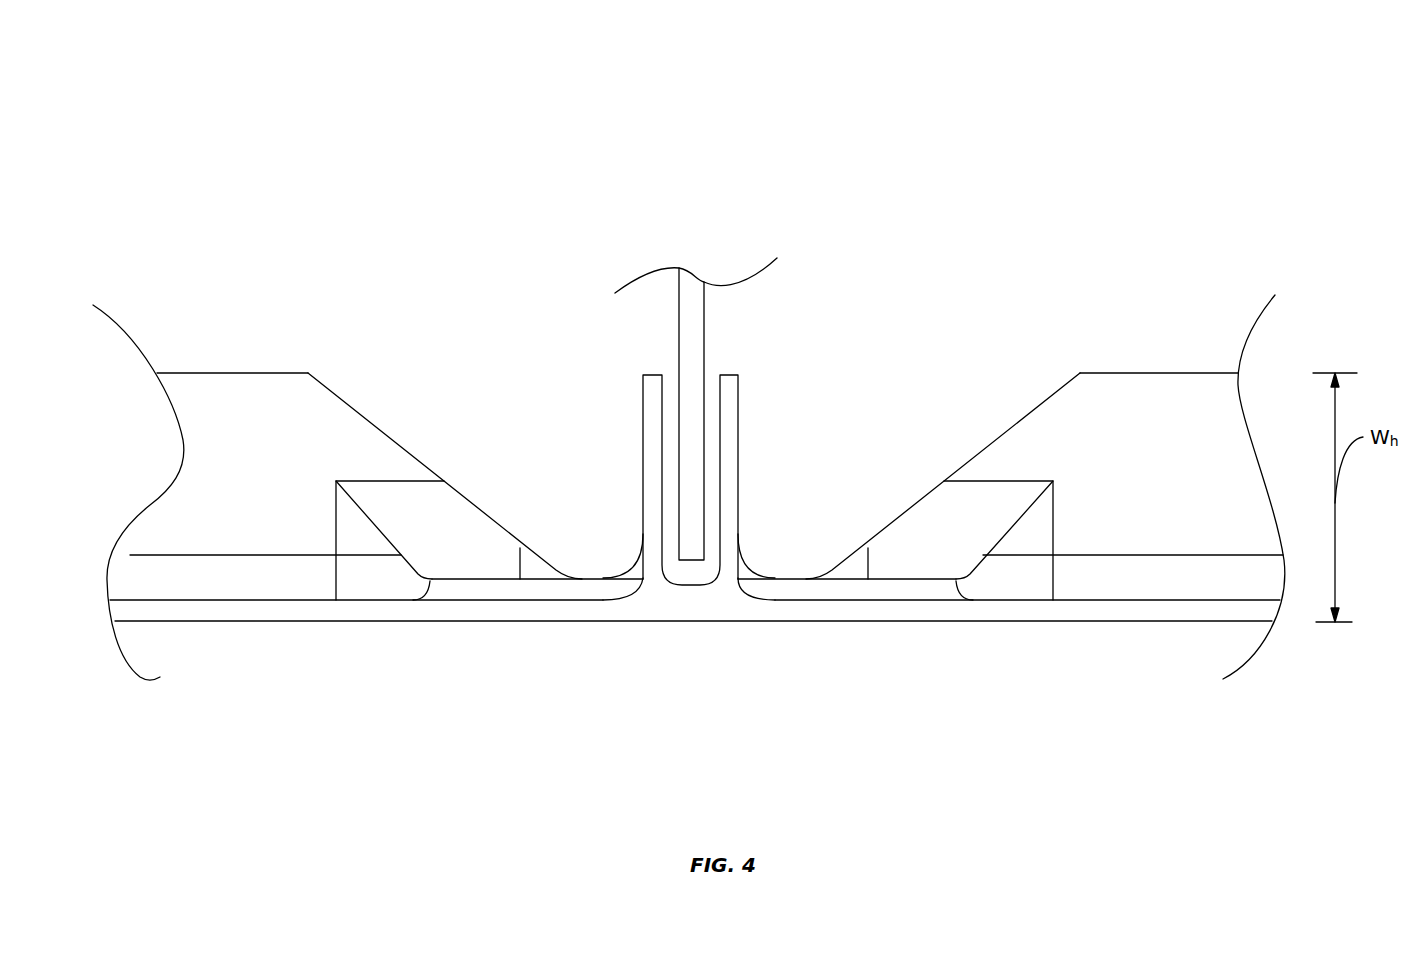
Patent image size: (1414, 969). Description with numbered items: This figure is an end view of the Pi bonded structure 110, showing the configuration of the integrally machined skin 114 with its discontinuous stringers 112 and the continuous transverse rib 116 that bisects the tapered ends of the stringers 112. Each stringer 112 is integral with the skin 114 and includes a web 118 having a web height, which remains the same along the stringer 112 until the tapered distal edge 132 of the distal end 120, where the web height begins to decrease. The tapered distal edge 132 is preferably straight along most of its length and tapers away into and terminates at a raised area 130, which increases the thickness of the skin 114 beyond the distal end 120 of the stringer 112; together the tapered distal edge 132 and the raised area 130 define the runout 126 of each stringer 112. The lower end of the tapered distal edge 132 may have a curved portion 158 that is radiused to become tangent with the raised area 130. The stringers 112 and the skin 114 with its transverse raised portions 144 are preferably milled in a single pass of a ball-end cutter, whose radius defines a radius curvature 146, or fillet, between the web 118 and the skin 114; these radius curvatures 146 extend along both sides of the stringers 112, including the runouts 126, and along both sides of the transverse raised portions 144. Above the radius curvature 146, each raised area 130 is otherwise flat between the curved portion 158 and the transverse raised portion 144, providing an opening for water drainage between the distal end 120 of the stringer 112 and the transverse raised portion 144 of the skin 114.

The Pi bonded structure 110 is at (1092, 123).
The stringer 112 is at (252, 345).
The skin 114 is at (233, 615).
The transverse rib 116 is at (697, 338).
The web 118 is at (231, 460).
The distal end 120 is at (437, 453).
The runout 126 is at (487, 387).
The raised area 130 is at (593, 578).
The tapered distal edge 132 is at (375, 425).
The transverse raised portion 144 is at (645, 407).
The radius curvature 146 is at (292, 577).
The curved portion 158 is at (557, 573).